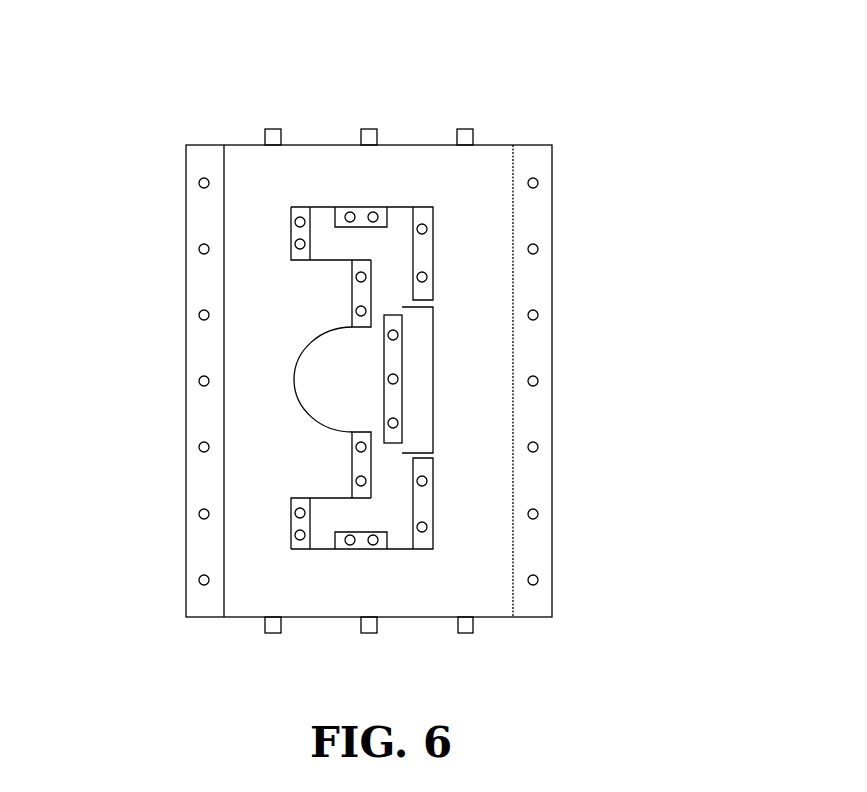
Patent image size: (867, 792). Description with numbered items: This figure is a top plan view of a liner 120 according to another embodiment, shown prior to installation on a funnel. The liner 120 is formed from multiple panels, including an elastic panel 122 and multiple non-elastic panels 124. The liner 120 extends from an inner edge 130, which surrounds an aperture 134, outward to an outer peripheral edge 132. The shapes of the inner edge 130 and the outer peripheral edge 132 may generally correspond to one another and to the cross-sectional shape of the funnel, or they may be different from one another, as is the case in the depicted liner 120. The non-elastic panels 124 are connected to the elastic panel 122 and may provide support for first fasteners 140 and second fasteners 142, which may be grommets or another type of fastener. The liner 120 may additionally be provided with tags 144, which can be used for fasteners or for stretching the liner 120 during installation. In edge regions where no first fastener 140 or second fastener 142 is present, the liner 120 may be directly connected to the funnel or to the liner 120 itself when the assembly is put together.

The liner 120 is at (394, 370).
The elastic panel 122 is at (494, 157).
The non-elastic panels 124 is at (195, 218).
The inner edge 130 is at (418, 307).
The outer peripheral edge 132 is at (513, 617).
The aperture 134 is at (320, 379).
The first fasteners 140 is at (198, 181).
The second fasteners 142 is at (375, 549).
The tags 144 is at (368, 129).